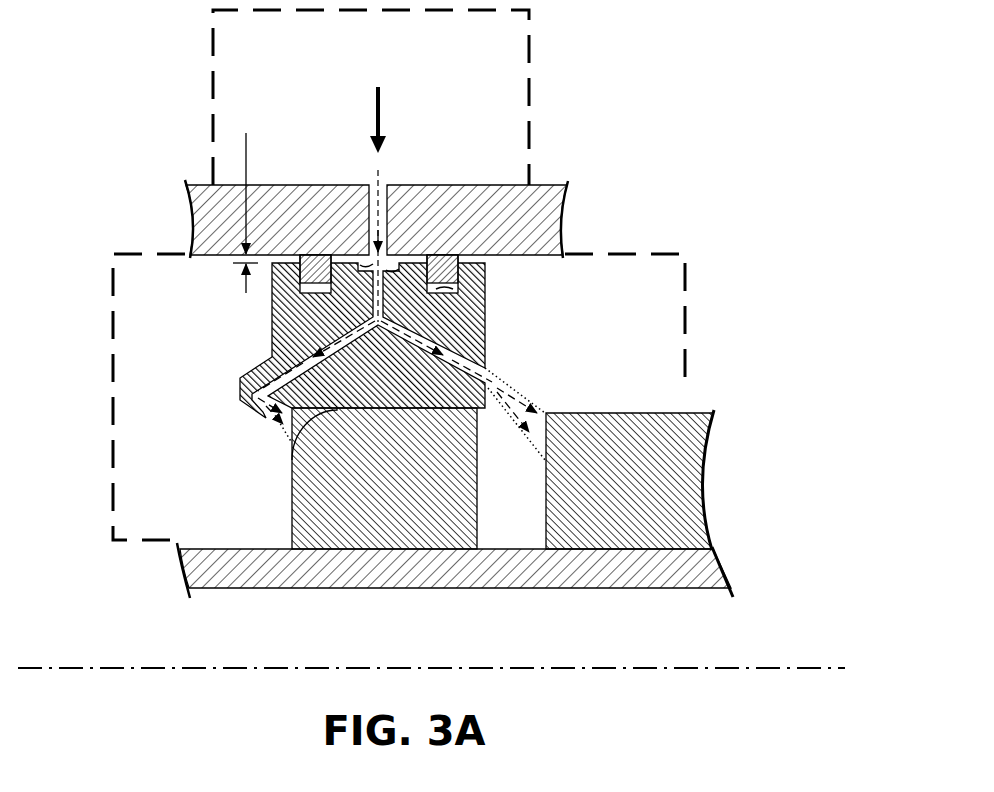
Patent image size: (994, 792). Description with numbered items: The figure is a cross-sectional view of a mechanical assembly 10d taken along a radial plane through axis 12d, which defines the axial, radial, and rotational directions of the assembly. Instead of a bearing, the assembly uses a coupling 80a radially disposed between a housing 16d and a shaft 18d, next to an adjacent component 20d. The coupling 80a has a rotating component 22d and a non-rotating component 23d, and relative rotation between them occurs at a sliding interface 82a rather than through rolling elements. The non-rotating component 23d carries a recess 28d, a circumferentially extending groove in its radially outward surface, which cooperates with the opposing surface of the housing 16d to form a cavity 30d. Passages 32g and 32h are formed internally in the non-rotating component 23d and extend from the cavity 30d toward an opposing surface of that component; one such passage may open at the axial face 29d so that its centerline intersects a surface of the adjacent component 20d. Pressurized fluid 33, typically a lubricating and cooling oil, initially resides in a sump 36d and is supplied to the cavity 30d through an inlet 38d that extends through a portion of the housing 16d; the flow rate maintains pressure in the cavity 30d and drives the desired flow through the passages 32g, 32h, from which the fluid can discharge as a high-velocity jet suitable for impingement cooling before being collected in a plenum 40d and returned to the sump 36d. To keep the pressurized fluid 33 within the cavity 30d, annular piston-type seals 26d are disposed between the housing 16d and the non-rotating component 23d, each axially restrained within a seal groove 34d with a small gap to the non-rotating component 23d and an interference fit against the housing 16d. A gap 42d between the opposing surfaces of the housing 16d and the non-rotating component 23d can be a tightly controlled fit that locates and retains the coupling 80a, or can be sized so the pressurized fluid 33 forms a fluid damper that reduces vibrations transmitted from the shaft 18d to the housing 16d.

The mechanical assembly 10d is at (781, 167).
The axis 12d is at (775, 668).
The housing 16d is at (205, 185).
The shaft 18d is at (612, 590).
The adjacent component 20d is at (698, 413).
The rotating component 22d is at (292, 511).
The non-rotating component 23d is at (272, 321).
The seal 26d is at (483, 260).
The recess 28d is at (400, 274).
The axial face 29d is at (487, 410).
The cavity 30d is at (365, 261).
The passage 32g is at (470, 360).
The passage 32h is at (252, 366).
The pressurized fluid 33 is at (366, 79).
The seal groove 34d is at (447, 298).
The sump 36d is at (532, 68).
The inlet 38d is at (392, 268).
The plenum 40d is at (687, 316).
The gap 42d is at (248, 199).
The coupling 80a is at (573, 347).
The sliding interface 82a is at (292, 460).